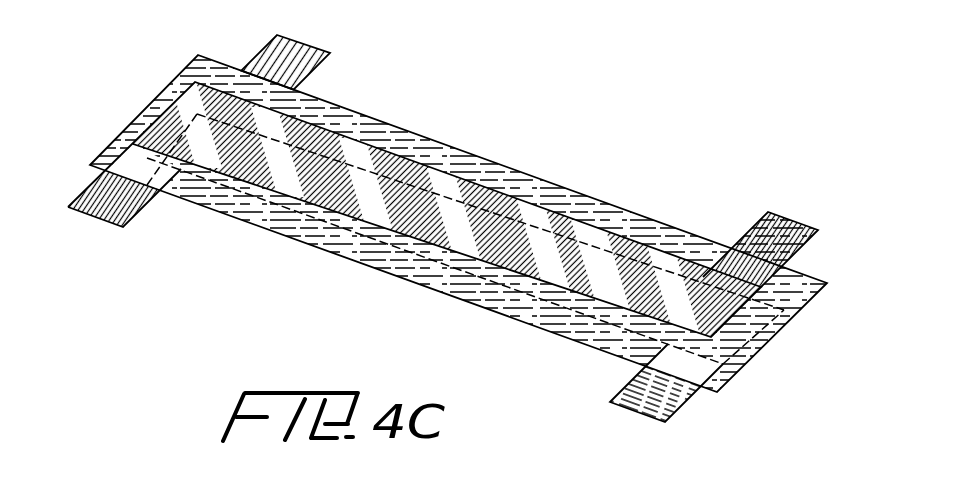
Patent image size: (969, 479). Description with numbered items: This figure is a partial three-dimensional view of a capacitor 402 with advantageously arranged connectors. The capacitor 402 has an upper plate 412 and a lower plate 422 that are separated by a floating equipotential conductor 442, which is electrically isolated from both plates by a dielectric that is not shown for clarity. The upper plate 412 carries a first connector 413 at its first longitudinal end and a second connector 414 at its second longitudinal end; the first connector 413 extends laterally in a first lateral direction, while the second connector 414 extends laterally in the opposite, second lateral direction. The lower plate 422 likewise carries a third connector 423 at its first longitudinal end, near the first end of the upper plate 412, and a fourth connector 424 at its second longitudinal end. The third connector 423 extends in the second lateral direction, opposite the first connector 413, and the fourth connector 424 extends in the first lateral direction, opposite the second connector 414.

The capacitor 402 is at (572, 78).
The floating equipotential conductor 442 is at (585, 193).
The lower plate 422 is at (627, 264).
The upper plate 412 is at (298, 192).
The first connector 413 is at (105, 221).
The second connector 414 is at (793, 220).
The third connector 423 is at (310, 50).
The fourth connector 424 is at (647, 418).